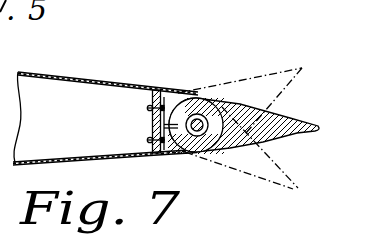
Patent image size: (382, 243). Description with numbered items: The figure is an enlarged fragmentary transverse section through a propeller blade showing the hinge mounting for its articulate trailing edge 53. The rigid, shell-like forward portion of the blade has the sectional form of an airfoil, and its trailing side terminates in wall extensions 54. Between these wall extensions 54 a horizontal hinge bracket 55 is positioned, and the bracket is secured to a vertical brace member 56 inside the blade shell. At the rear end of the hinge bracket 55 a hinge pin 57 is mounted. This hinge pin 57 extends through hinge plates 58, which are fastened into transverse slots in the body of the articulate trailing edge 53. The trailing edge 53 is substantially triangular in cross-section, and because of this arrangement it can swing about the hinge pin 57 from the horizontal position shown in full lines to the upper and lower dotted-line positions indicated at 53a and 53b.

The articulate trailing edge 53 is at (292, 110).
The lower dotted line position of articulate trailing edge 53a is at (293, 188).
The upper dotted line position of articulate trailing edge 53b is at (261, 80).
The wall extensions 54 is at (166, 89).
The horizontal hinge bracket 55 is at (152, 126).
The vertical brace member 56 is at (152, 98).
The hinge pin 57 is at (203, 130).
The hinge plates 58 is at (161, 156).